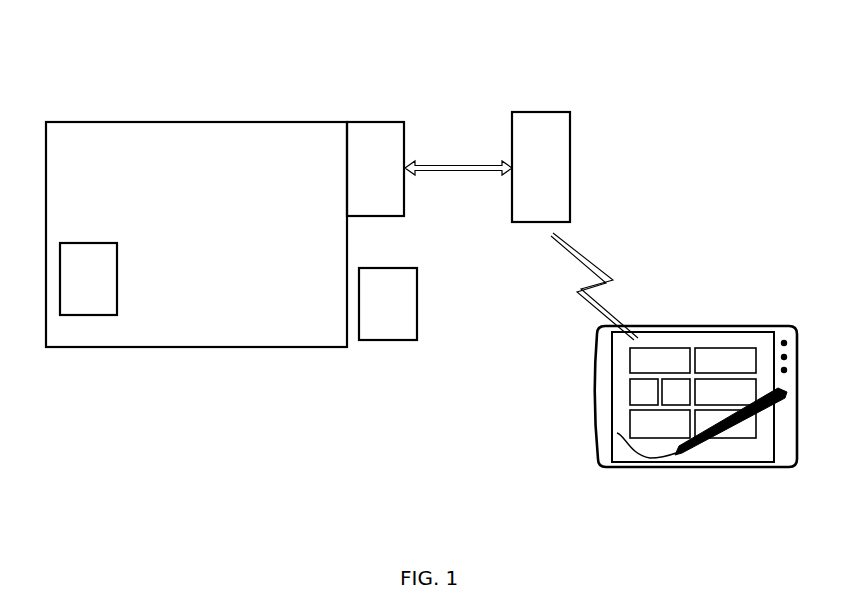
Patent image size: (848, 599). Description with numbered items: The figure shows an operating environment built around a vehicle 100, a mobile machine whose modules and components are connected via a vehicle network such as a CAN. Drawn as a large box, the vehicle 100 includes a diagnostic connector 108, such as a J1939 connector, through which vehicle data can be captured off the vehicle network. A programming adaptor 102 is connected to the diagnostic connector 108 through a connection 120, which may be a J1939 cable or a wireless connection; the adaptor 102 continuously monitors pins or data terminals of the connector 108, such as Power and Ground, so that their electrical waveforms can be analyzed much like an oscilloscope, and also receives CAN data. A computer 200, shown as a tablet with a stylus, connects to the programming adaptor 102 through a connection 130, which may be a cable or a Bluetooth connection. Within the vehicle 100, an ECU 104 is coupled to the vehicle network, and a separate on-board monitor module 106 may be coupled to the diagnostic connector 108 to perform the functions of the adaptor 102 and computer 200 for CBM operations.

The vehicle 100 is at (140, 120).
The programming adaptor 102 is at (547, 118).
The ECU 104 is at (76, 298).
The on-board monitor module 106 is at (375, 323).
The diagnostic connector 108 is at (385, 205).
The connection 120 is at (458, 156).
The connection 130 is at (598, 286).
The computer 200 is at (752, 327).